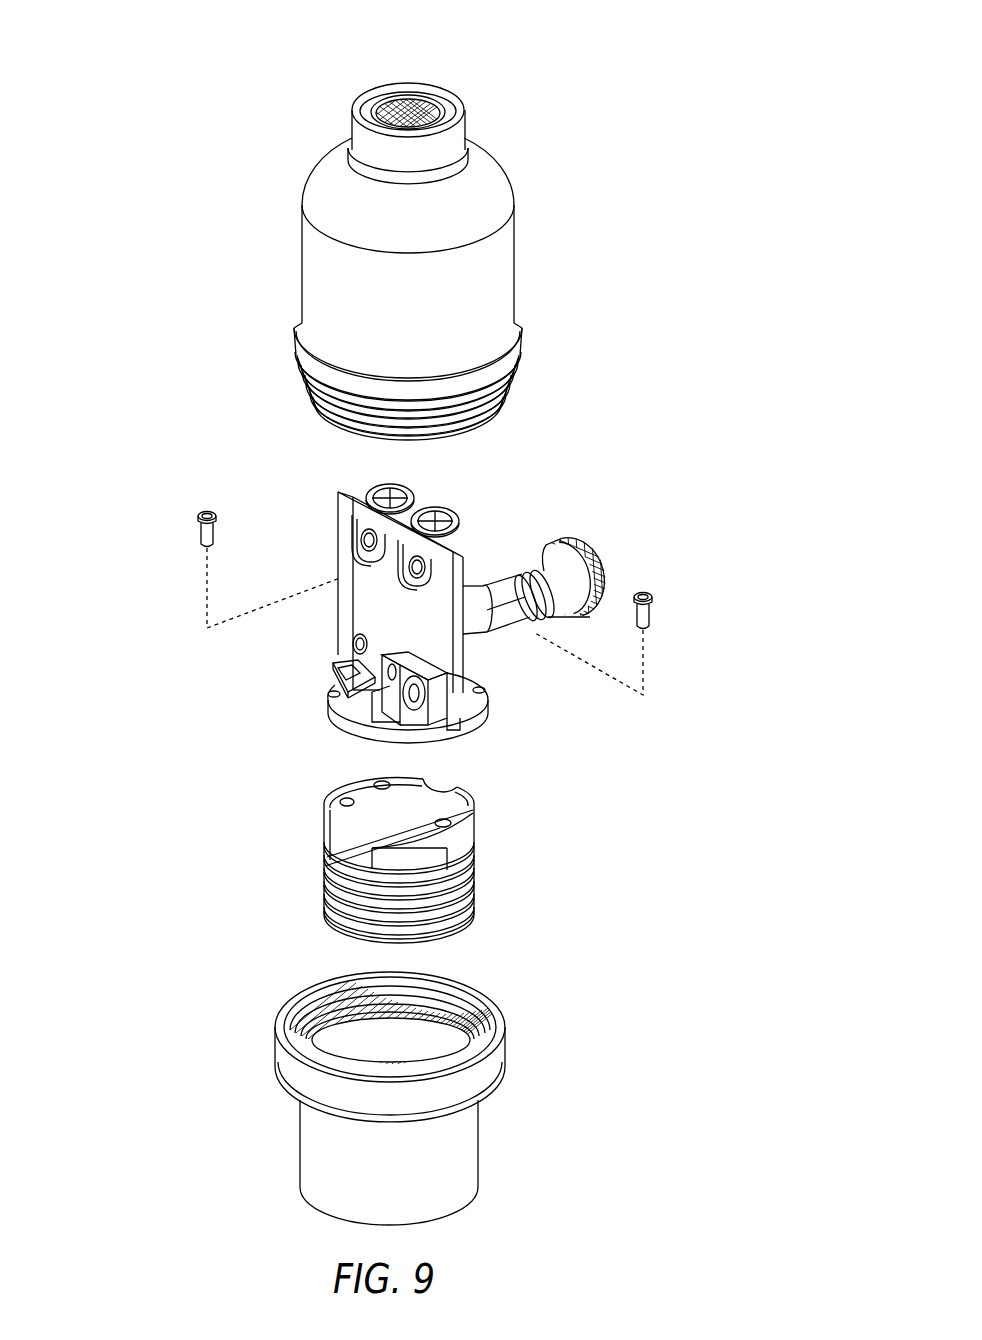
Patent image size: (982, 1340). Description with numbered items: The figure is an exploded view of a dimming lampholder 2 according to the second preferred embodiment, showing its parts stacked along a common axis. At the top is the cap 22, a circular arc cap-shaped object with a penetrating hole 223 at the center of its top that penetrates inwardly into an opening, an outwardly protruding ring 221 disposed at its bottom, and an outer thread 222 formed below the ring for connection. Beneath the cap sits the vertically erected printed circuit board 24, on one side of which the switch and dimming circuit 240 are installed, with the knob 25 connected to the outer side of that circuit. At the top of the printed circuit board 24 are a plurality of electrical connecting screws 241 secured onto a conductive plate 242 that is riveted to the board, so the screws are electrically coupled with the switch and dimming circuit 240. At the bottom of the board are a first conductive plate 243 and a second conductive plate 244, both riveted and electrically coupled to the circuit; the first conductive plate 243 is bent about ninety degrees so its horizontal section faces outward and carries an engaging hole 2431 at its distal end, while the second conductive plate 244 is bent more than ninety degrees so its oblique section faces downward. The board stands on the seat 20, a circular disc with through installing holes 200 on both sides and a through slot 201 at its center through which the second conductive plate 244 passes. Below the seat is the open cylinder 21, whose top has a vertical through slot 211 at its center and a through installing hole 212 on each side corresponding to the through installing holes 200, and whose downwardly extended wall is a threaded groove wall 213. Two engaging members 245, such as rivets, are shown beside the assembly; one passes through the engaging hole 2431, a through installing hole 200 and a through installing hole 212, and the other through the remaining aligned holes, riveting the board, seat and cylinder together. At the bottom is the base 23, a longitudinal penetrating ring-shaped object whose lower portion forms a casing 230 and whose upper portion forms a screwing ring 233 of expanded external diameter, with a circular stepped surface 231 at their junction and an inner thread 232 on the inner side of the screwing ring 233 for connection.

The dimming lampholder 2 is at (605, 452).
The seat 20 is at (483, 681).
The through installing holes 200 is at (323, 687).
The through slot 201 is at (390, 700).
The open cylinder 21 is at (476, 838).
The vertical through slot 211 is at (440, 798).
The through installing hole 212 is at (322, 805).
The threaded groove wall 213 is at (470, 904).
The cap 22 is at (518, 248).
The outwardly protruding ring 221 is at (518, 372).
The outer thread 222 is at (502, 407).
The penetrating hole 223 is at (422, 100).
The base 23 is at (500, 1109).
The casing 230 is at (473, 1150).
The circular stepped surface 231 is at (473, 1040).
The inner thread 232 is at (470, 993).
The screwing ring 233 is at (492, 1070).
The printed circuit board 24 is at (338, 541).
The switch and dimming circuit 240 is at (473, 605).
The electrical connecting screws 241 is at (372, 487).
The conductive plate 242 is at (353, 525).
The first conductive plate 243 is at (330, 683).
The engaging hole 2431 is at (340, 662).
The second conductive plate 244 is at (385, 678).
The engaging members 245 is at (207, 534).
The knob 25 is at (567, 567).